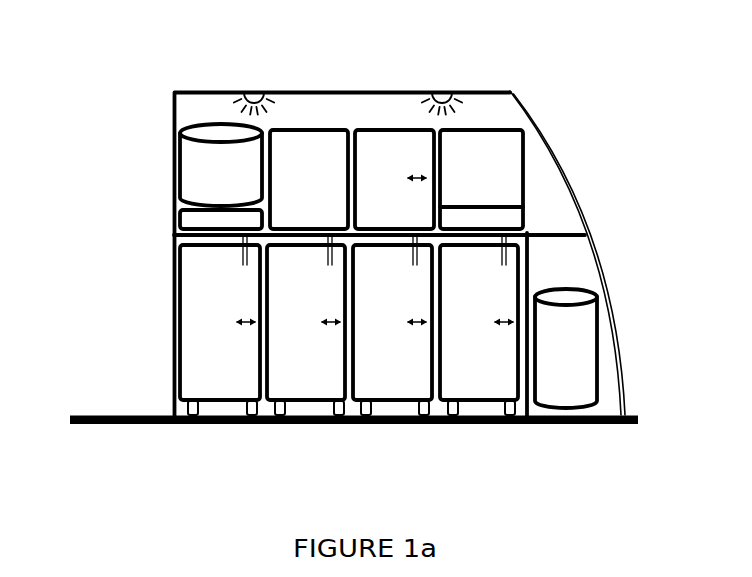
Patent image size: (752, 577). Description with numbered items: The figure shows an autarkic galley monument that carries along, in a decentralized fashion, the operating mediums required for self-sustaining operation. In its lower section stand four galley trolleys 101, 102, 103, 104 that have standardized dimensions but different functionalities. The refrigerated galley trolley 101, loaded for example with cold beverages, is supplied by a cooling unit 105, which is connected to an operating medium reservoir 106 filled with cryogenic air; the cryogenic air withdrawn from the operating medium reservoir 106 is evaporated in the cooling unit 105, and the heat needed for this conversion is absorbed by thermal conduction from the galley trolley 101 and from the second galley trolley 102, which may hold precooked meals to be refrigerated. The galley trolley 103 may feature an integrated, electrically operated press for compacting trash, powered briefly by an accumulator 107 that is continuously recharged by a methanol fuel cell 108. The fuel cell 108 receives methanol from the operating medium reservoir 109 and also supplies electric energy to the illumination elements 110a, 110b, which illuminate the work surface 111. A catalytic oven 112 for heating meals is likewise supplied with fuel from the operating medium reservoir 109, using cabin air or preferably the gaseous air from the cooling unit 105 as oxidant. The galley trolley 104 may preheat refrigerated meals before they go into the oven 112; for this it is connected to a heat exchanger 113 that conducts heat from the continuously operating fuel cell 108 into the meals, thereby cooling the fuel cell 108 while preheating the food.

The refrigerated galley trolley 101 is at (220, 373).
The second galley trolley 102 is at (310, 373).
The galley trolley 103 is at (402, 373).
The galley trolley 104 is at (488, 373).
The cooling unit 105 is at (193, 222).
The operating medium reservoir 106 is at (212, 182).
The accumulator 107 is at (302, 160).
The methanol fuel cell 108 is at (480, 158).
The operating medium reservoir 109 is at (567, 323).
The illumination element 110a is at (255, 92).
The illumination element 110b is at (442, 92).
The work surface 111 is at (563, 232).
The catalytic oven 112 is at (402, 157).
The heat exchanger 113 is at (498, 213).